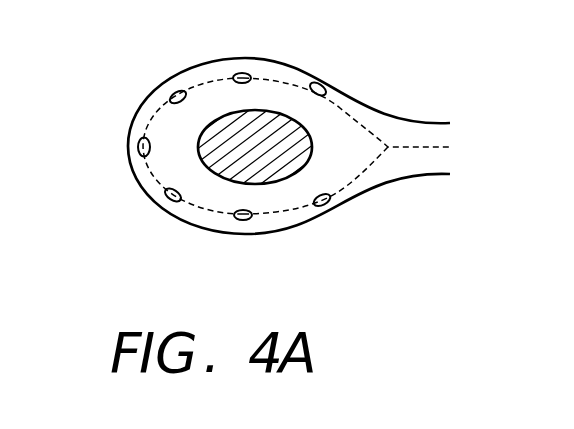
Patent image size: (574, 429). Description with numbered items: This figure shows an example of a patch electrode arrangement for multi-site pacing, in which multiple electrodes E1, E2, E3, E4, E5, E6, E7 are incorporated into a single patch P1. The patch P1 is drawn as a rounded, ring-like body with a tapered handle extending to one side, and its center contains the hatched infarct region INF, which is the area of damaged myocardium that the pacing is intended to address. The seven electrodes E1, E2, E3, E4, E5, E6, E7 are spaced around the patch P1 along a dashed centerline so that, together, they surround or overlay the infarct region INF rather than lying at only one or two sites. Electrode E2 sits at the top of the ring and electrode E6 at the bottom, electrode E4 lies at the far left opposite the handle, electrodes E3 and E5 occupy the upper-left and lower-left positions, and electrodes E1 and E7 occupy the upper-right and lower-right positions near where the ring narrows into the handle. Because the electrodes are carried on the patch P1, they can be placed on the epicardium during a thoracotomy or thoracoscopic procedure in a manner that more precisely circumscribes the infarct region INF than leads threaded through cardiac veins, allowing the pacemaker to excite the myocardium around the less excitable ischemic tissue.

The patch P1 is at (198, 67).
The infarct region INF is at (197, 140).
The electrode E1 is at (327, 83).
The electrode E2 is at (243, 72).
The electrode E3 is at (177, 90).
The electrode E4 is at (138, 146).
The electrode E5 is at (168, 200).
The electrode E6 is at (243, 222).
The electrode E7 is at (325, 206).